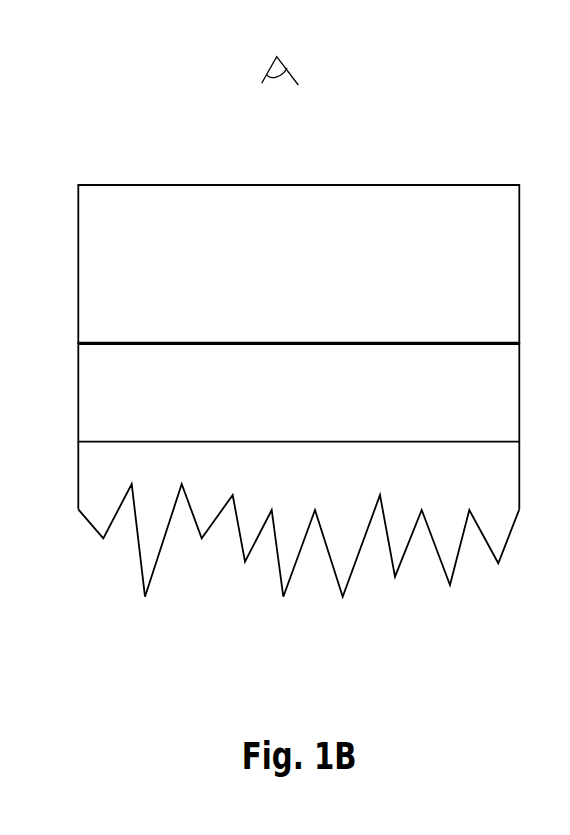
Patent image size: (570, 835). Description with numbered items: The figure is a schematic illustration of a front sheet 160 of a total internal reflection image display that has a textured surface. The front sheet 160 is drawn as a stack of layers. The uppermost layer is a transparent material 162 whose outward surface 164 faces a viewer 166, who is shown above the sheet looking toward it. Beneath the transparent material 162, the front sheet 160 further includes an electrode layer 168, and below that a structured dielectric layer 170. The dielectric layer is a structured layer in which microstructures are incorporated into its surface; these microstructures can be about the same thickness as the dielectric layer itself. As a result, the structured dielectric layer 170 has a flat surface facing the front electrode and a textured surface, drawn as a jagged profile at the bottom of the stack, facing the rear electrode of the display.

The front sheet 160 is at (289, 314).
The transparent material 162 is at (329, 288).
The outward surface 164 is at (105, 184).
The viewer 166 is at (287, 69).
The electrode layer 168 is at (329, 412).
The structured dielectric layer 170 is at (329, 486).